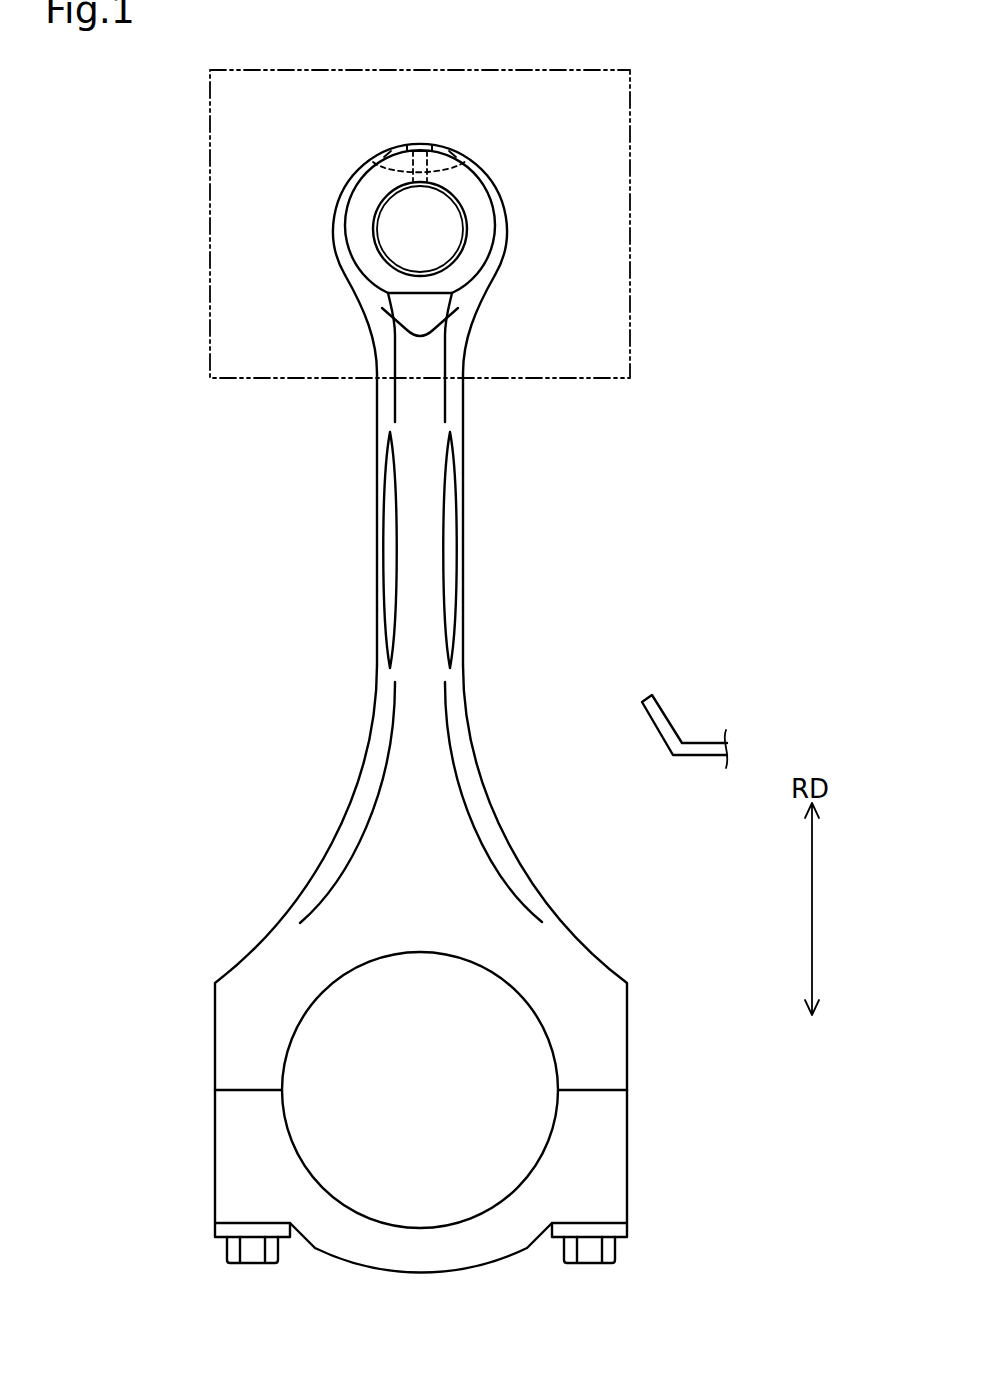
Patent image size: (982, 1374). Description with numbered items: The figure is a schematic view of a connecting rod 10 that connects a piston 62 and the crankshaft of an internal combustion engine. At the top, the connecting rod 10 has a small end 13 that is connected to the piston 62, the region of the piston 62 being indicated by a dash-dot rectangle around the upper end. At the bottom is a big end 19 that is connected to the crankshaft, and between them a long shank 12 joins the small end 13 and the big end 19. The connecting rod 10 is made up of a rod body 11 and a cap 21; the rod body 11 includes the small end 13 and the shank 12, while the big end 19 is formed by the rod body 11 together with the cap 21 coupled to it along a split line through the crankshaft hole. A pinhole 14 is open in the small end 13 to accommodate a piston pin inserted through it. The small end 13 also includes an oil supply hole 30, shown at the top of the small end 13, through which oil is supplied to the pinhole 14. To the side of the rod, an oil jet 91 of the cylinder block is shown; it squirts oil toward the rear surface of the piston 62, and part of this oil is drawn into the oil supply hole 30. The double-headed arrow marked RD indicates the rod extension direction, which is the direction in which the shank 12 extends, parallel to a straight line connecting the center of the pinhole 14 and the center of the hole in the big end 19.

The connecting rod 10 is at (212, 738).
The rod body 11 is at (463, 410).
The shank 12 is at (425, 605).
The small end 13 is at (480, 227).
The pinhole 14 is at (403, 217).
The big end 19 is at (548, 950).
The cap 21 is at (628, 1190).
The oil supply hole 30 is at (436, 128).
The piston 62 is at (607, 378).
The oil jet 91 is at (663, 712).